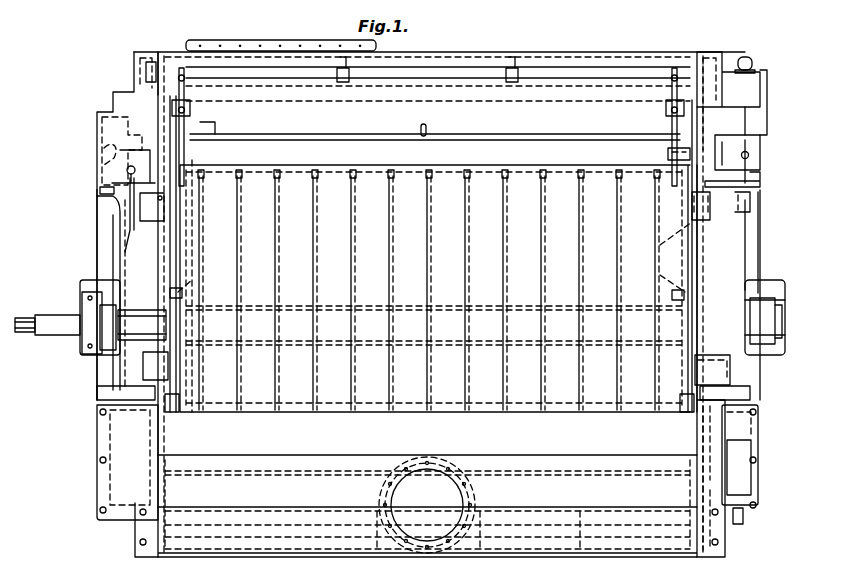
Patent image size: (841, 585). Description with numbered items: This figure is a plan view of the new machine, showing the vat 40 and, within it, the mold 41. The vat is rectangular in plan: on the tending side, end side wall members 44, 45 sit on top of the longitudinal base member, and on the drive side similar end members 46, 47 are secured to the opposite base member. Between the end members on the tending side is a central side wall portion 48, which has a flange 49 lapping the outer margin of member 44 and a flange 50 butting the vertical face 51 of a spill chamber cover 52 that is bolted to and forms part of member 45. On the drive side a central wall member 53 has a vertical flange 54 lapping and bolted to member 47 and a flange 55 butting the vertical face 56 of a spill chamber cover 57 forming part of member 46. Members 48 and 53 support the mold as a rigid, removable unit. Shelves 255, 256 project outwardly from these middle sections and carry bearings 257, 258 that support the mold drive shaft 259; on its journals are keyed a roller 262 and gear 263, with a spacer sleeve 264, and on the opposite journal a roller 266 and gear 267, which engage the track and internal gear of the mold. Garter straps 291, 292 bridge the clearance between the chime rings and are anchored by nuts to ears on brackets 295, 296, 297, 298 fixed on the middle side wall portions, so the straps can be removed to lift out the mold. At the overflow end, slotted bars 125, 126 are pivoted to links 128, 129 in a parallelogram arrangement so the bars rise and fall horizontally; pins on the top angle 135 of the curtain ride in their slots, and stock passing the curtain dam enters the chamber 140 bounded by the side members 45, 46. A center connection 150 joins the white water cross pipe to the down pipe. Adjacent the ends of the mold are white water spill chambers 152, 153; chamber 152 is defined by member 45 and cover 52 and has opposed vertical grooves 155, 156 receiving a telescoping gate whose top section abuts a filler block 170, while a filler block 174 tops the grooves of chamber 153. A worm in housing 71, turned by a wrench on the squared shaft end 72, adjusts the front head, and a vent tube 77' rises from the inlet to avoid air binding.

The vat 40 is at (88, 172).
The mold 41 is at (372, 420).
The end side wall member 44 is at (724, 532).
The end side wall member 45 is at (728, 62).
The end member 46 is at (134, 62).
The end member 47 is at (135, 532).
The central side wall portion 48 is at (752, 230).
The flange 49 is at (755, 393).
The flange 50 is at (752, 212).
The vertical face 51 is at (756, 184).
The spill chamber cover 52 is at (748, 150).
The central wall member 53 is at (97, 242).
The vertical flange 54 is at (97, 396).
The flange 55 is at (110, 203).
The vertical face 56 is at (100, 190).
The spill chamber cover 57 is at (100, 142).
The housing 71 is at (742, 480).
The squared projecting end 72 is at (745, 520).
The vent tube 77' is at (230, 123).
The bar 125 is at (199, 254).
The bar 126 is at (668, 152).
The link 128 is at (183, 108).
The link 129 is at (670, 80).
The top angle 135 is at (360, 140).
The chamber 140 is at (598, 82).
The center connection 150 is at (455, 468).
The white water spill chamber 152 is at (738, 165).
The white water spill chamber 153 is at (104, 150).
The groove 155 is at (692, 206).
The groove 156 is at (752, 178).
The filler block 170 is at (701, 256).
The filler block 174 is at (144, 215).
The shelf 255 is at (762, 280).
The shelf 256 is at (82, 286).
The bearing 257 is at (764, 346).
The bearing 258 is at (92, 343).
The mold drive shaft 259 is at (48, 332).
The roller 262 is at (183, 296).
The gear 263 is at (188, 284).
The spacer sleeve 264 is at (150, 320).
The roller 266 is at (672, 295).
The gear 267 is at (660, 275).
The garter strap 291 is at (166, 410).
The garter strap 292 is at (690, 408).
The bracket 295 is at (152, 210).
The bracket 296 is at (165, 370).
The bracket 297 is at (660, 245).
The bracket 298 is at (700, 372).